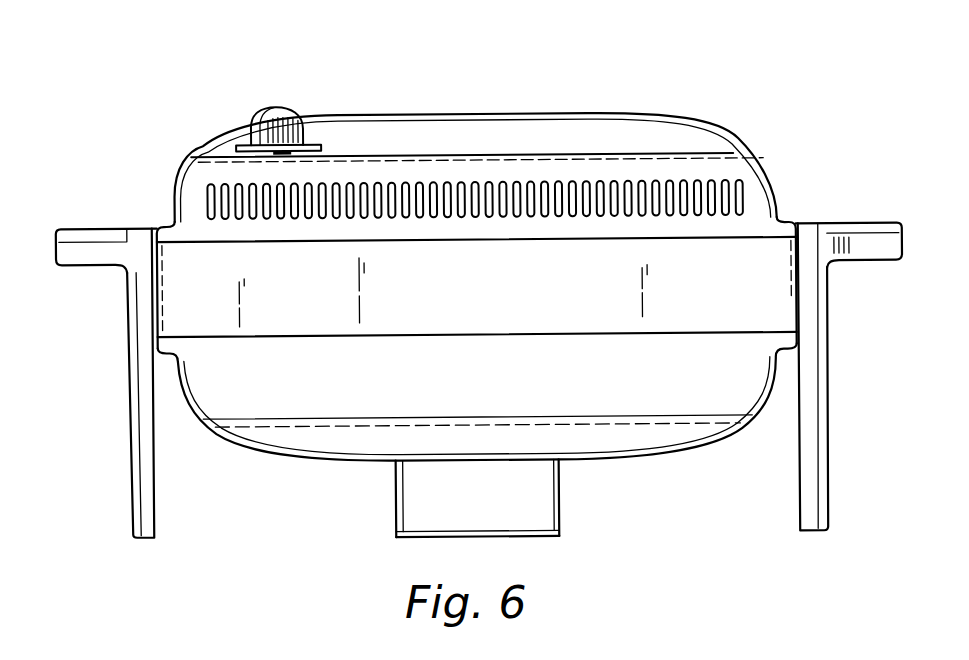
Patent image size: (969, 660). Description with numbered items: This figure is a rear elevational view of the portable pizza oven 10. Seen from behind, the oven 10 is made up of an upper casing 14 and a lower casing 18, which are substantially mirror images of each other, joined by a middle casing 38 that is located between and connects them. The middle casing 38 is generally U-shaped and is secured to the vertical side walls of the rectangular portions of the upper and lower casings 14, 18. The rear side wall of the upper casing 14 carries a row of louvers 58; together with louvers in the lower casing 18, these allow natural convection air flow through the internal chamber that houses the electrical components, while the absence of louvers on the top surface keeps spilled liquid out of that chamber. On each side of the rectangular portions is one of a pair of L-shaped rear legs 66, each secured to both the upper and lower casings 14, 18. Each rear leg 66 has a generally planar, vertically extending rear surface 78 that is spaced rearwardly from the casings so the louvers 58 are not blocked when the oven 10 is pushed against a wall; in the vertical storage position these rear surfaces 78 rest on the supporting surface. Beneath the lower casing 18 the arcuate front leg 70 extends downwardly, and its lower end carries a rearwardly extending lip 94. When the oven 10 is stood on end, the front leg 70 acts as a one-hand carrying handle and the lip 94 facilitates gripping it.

The portable pizza oven 10 is at (824, 142).
The upper casing 14 is at (705, 115).
The louvers 58 is at (488, 179).
The middle casing 38 is at (493, 290).
The lower casing 18 is at (285, 462).
The front leg 70 is at (567, 494).
The lip 94 is at (441, 533).
The rear legs 66 is at (121, 476).
The rear surface 78 is at (148, 512).